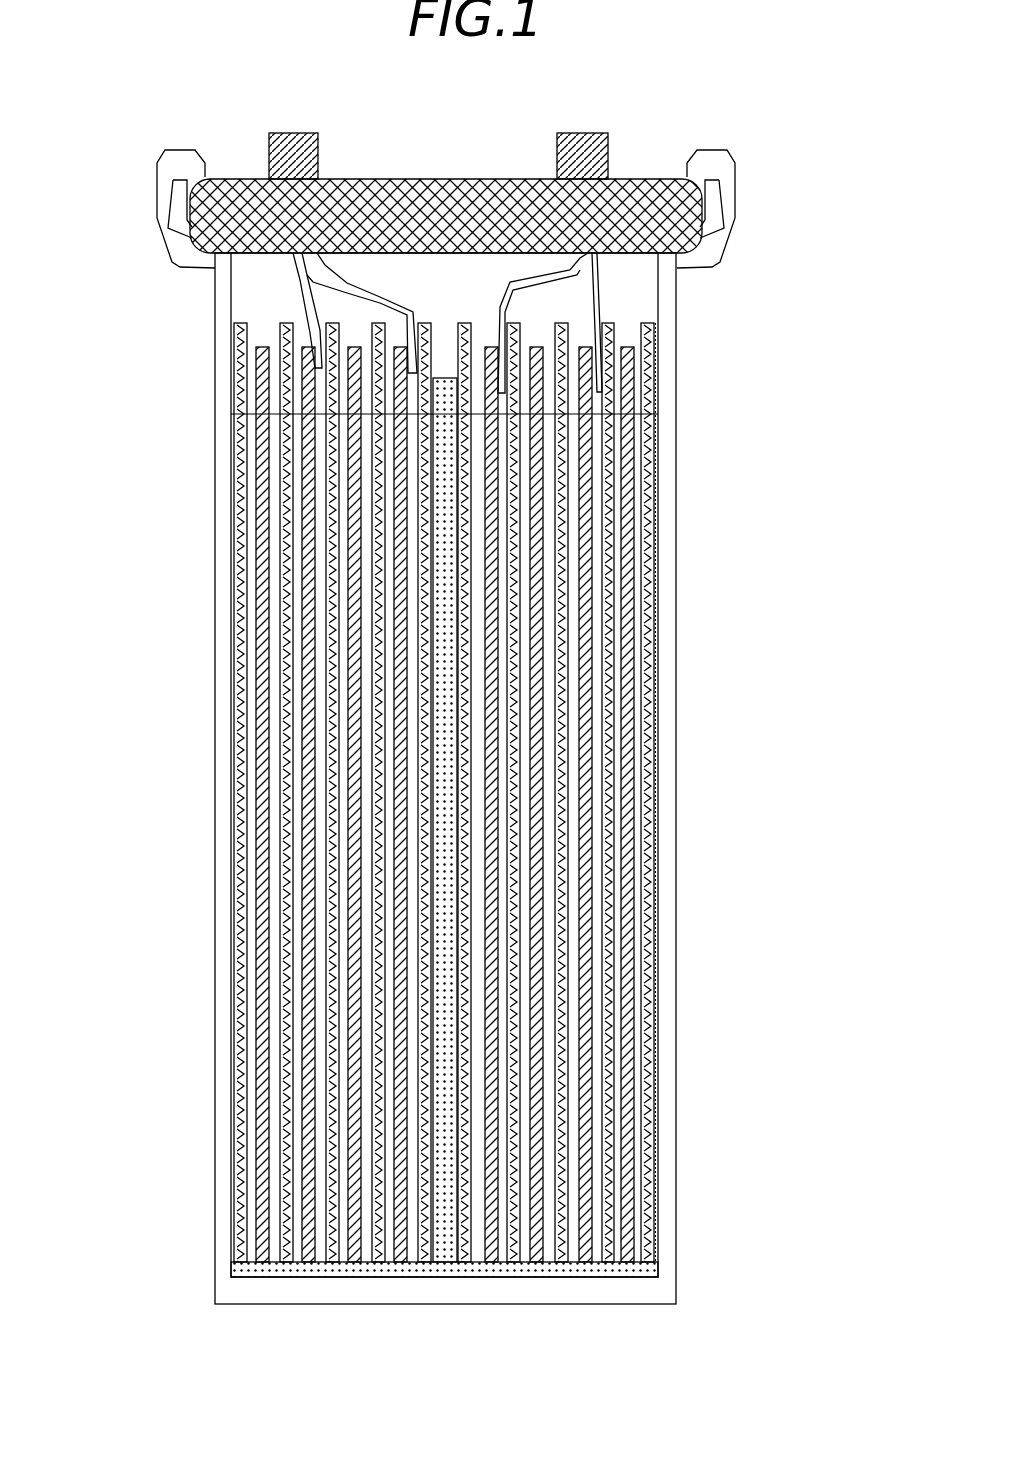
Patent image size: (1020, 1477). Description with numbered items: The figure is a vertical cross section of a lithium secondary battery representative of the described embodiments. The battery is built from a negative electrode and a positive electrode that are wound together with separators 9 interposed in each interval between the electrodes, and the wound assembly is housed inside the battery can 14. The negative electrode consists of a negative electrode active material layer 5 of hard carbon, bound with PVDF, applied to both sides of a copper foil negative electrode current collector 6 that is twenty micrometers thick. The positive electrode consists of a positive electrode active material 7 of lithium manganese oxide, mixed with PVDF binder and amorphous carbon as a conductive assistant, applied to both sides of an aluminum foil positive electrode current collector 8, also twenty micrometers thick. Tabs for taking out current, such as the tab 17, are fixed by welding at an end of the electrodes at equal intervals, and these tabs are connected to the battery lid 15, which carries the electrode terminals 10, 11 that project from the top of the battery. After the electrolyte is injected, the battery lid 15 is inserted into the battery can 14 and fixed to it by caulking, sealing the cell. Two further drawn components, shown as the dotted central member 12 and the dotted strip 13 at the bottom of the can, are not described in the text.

The negative electrode active material layer 5 is at (250, 485).
The negative electrode current collector 6 is at (313, 312).
The positive electrode active material 7 is at (650, 535).
The positive electrode current collector 8 is at (654, 605).
The separator 9 is at (610, 357).
The electrode terminal 10 is at (565, 150).
The electrode terminal 11 is at (287, 152).
The center spacer 12 is at (440, 1245).
The bottom spacer 13 is at (657, 1268).
The battery can 14 is at (665, 998).
The battery lid 15 is at (665, 180).
The tab 17 is at (588, 300).